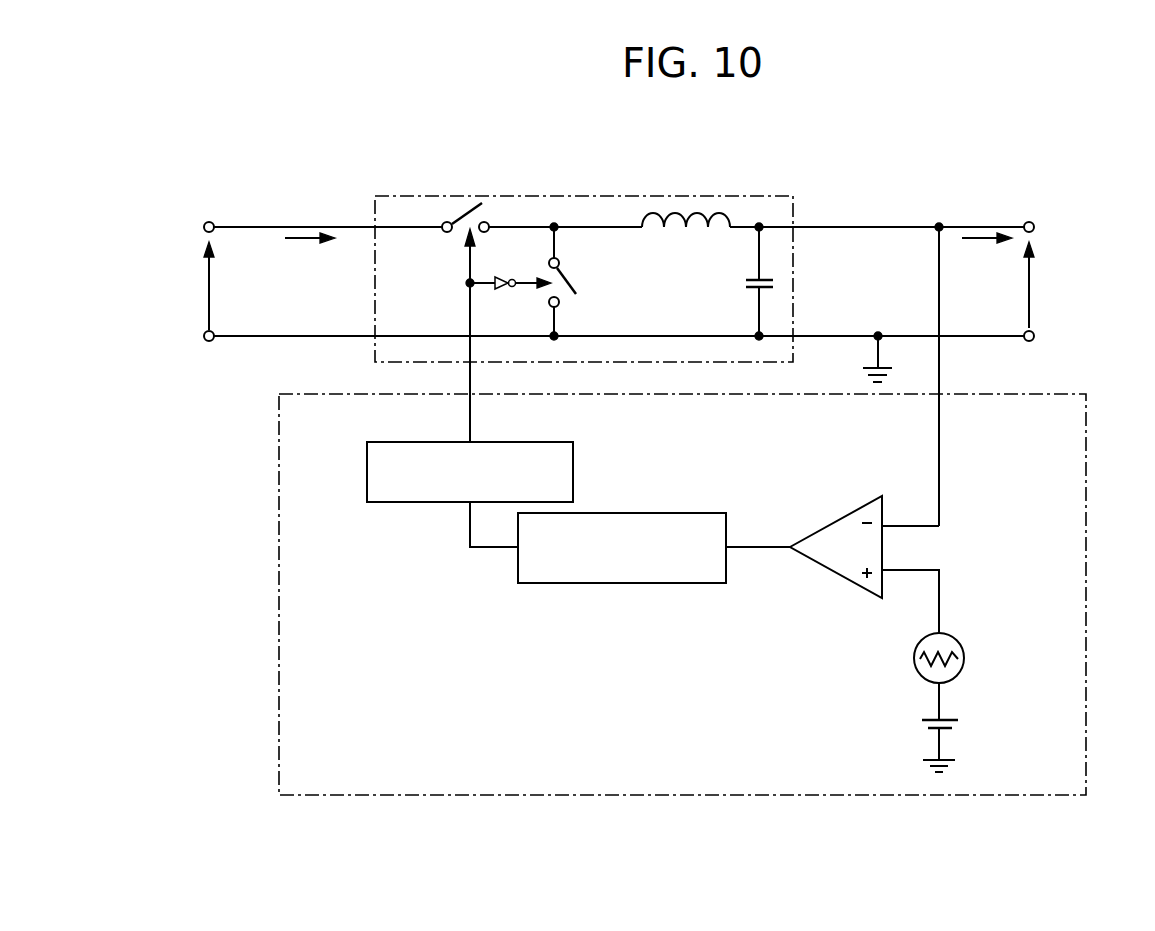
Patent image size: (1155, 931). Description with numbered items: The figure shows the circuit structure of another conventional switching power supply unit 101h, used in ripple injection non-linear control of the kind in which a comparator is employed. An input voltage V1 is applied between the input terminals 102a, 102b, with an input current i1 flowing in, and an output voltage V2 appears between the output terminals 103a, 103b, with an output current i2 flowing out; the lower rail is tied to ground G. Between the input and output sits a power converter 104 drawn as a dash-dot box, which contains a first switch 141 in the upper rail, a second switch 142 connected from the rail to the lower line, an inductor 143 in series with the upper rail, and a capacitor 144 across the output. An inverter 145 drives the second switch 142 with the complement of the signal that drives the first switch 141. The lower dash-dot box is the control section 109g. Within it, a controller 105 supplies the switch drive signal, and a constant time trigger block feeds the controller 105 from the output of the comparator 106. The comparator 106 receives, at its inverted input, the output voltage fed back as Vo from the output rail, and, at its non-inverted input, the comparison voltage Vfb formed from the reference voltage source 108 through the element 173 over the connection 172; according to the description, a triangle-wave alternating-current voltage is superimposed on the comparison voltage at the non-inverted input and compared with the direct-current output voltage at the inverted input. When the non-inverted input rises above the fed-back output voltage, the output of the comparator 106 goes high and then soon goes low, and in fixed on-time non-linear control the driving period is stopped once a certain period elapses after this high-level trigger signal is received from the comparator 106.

The power conversion device 101h is at (768, 125).
The input terminal 102a is at (238, 211).
The input terminal 102b is at (213, 340).
The output terminal 103a is at (1065, 212).
The output terminal 103b is at (1036, 337).
The power converter 104 is at (613, 195).
The controller 105 is at (367, 470).
The comparator 106 is at (851, 512).
The reference voltage source 108 is at (955, 725).
The control circuit 109g is at (279, 674).
The switch 141 is at (458, 230).
The switch 142 is at (550, 277).
The inductor 143 is at (694, 247).
The capacitor 144 is at (772, 282).
The inverter 145 is at (512, 288).
The connection line 172 is at (940, 698).
The thermistor 173 is at (939, 625).
The ground G is at (881, 355).
The input voltage V1 is at (193, 286).
The output voltage V2 is at (1044, 285).
The input current i1 is at (310, 253).
The output current i2 is at (987, 253).
The output voltage signal Vo is at (910, 512).
The feedback voltage Vfb is at (910, 588).